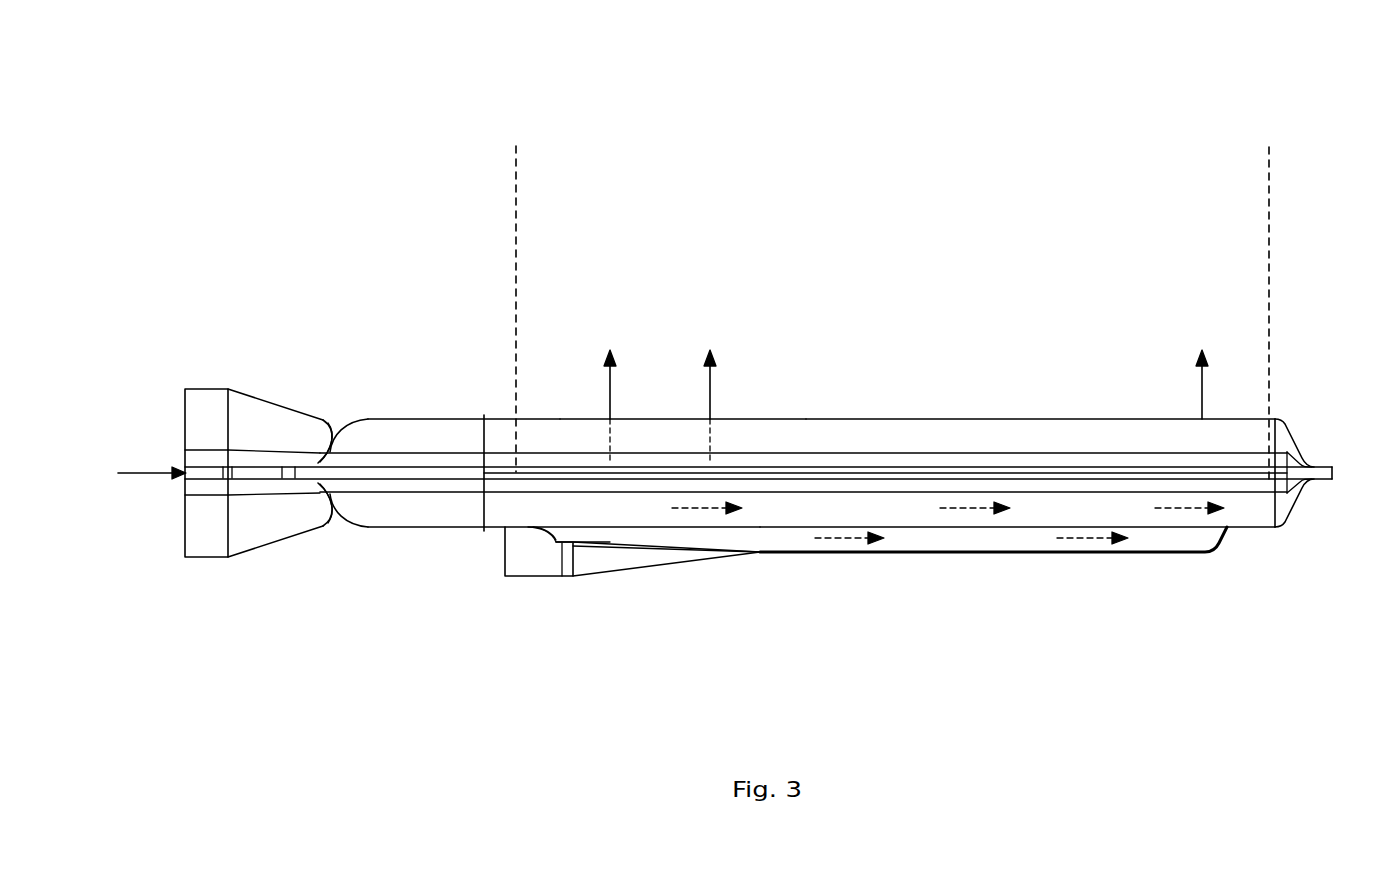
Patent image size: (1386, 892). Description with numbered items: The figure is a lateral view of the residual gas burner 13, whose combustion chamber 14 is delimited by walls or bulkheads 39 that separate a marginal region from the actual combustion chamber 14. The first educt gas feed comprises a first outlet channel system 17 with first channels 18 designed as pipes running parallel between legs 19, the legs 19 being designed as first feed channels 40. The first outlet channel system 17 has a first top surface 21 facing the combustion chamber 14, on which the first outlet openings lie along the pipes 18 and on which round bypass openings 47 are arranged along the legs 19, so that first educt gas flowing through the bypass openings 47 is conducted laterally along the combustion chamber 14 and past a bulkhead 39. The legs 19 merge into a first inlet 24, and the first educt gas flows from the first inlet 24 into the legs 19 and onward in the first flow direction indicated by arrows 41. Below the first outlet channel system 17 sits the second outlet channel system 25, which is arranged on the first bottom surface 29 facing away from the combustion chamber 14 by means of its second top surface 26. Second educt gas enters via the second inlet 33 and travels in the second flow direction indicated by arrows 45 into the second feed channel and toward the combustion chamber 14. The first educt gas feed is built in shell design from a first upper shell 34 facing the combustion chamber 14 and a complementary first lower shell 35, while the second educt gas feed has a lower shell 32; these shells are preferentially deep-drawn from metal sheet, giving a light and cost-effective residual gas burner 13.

The residual gas burner 13 is at (1142, 215).
The combustion chamber 14 is at (817, 257).
The first outlet channel system 17 is at (898, 380).
The first channel 18 is at (764, 440).
The legs 19 is at (1027, 430).
The first feed channels 40 is at (1017, 436).
The first top surface 21 is at (1108, 418).
The first inlet 24 is at (185, 512).
The second outlet channel system 25 is at (977, 400).
The second top surface 26 is at (1160, 467).
The first bottom surface 29 is at (445, 530).
The lower shell 32 is at (1032, 555).
The second inlet 33 is at (505, 552).
The first upper shell 34 is at (540, 418).
The first lower shell 35 is at (400, 530).
The bulkhead 39 is at (514, 233).
The arrows 41 is at (155, 462).
The arrows 45 is at (610, 385).
The bypass openings 47 is at (806, 419).